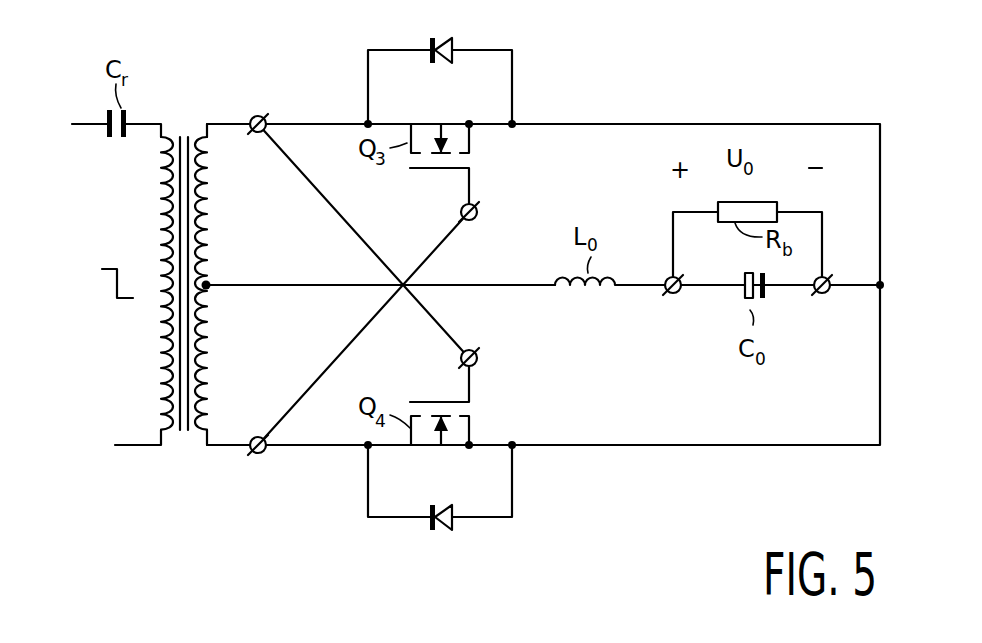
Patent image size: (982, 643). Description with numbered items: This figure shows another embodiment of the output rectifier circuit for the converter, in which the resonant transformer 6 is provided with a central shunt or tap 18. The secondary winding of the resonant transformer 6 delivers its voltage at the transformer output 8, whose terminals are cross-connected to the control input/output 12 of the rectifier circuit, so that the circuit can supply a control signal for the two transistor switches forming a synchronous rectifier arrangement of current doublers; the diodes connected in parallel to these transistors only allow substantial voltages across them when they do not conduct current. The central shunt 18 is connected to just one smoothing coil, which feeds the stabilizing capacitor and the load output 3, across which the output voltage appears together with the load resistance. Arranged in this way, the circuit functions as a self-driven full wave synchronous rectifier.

The load output 3 is at (675, 300).
The resonant transformer 6 is at (185, 103).
The transformer output 8 is at (258, 115).
The control input/output 12 is at (478, 211).
The central shunt or tap 18 is at (211, 291).